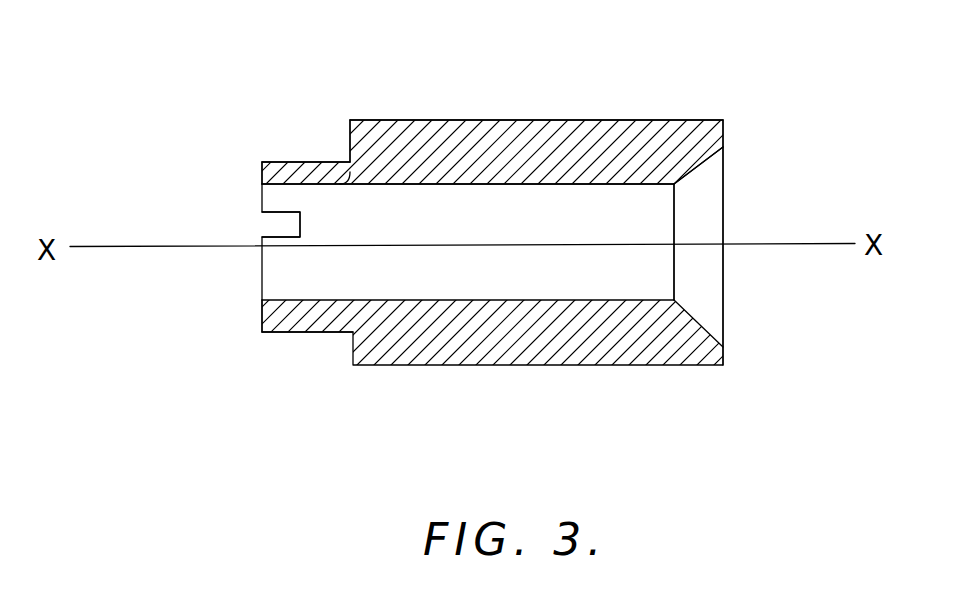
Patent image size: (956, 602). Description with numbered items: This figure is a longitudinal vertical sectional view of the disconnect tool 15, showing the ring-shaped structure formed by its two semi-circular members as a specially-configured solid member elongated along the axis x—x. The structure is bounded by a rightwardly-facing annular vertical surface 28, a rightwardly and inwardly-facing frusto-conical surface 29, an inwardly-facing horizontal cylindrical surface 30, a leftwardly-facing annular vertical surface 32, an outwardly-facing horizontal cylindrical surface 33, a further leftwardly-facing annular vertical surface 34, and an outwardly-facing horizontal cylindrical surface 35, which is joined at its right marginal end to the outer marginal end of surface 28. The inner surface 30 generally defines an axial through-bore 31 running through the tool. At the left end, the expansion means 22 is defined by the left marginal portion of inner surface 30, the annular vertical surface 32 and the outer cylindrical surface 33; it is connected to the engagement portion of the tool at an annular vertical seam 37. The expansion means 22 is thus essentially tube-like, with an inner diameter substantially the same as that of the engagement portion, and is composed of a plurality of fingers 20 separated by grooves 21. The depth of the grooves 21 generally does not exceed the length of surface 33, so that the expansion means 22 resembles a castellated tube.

The disconnect tool 15 is at (724, 70).
The fingers 20 is at (264, 318).
The grooves 21 is at (292, 234).
The expansion means 22 is at (303, 348).
The rightwardly-facing annular vertical surface 28 is at (724, 125).
The frusto-conical surface 29 is at (700, 166).
The inwardly-facing horizontal cylindrical surface 30 is at (634, 185).
The axial through-bore 31 is at (725, 243).
The leftwardly-facing annular vertical surface 32 is at (262, 165).
The outwardly-facing horizontal cylindrical surface 33 is at (298, 161).
The leftwardly-facing annular vertical surface 34 is at (350, 143).
The outwardly-facing horizontal cylindrical surface 35 is at (525, 120).
The annular vertical seam 37 is at (355, 163).